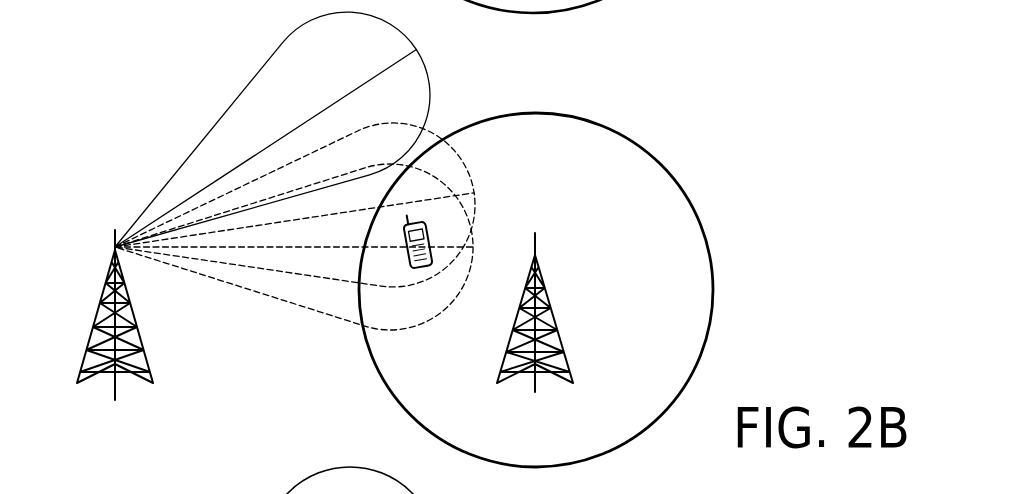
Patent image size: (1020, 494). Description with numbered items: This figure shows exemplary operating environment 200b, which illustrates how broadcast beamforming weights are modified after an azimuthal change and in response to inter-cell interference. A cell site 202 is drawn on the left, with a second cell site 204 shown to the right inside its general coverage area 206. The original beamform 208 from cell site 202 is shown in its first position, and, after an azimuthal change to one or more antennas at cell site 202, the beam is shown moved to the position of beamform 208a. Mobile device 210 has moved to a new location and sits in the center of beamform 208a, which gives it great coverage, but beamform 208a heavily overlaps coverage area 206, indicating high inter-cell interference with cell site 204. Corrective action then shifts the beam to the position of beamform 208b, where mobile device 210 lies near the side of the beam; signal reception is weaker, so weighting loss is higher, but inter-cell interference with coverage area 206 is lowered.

The exemplary operating environment 200b is at (92, 158).
The cell site 202 is at (97, 313).
The cell site 204 is at (550, 299).
The coverage area 206 is at (592, 113).
The beamform 208 is at (247, 93).
The beamform 208a is at (240, 285).
The beamform 208b is at (428, 138).
The mobile device 210 is at (432, 235).